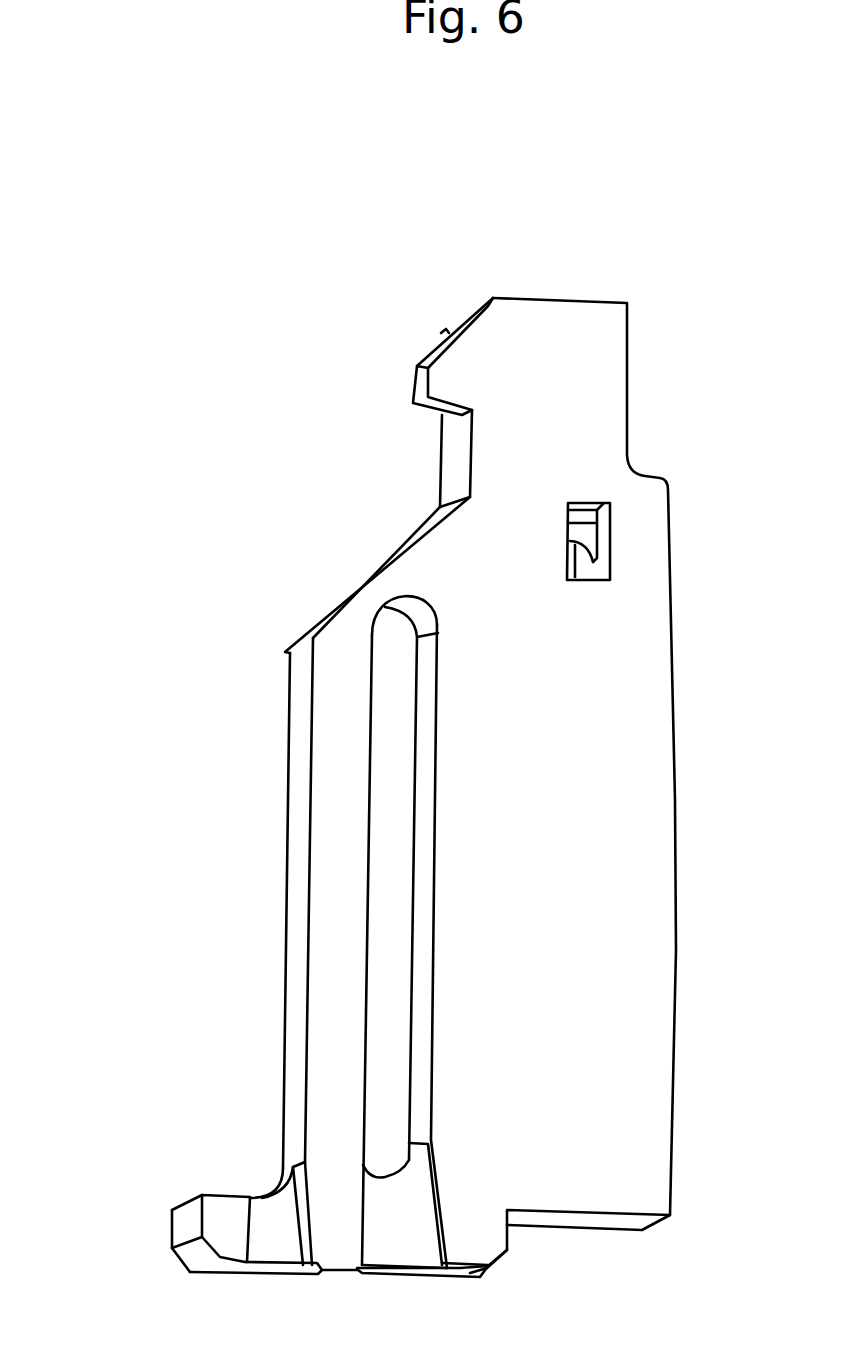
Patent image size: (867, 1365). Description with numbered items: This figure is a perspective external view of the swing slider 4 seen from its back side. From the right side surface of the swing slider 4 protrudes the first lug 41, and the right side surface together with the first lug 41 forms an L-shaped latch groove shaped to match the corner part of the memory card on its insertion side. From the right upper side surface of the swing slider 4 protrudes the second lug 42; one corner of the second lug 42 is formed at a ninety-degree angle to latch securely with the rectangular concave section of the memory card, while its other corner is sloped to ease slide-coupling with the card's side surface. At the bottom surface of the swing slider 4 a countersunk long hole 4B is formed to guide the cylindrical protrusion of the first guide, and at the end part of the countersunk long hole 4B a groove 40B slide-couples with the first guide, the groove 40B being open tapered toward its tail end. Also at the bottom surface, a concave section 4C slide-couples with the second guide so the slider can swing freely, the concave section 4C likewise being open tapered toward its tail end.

The swing slider 4 is at (208, 583).
The countersunk long hole 4B is at (390, 970).
The concave section 4C is at (277, 1250).
The groove 40B is at (400, 1238).
The first lug 41 is at (187, 1223).
The second lug 42 is at (413, 380).